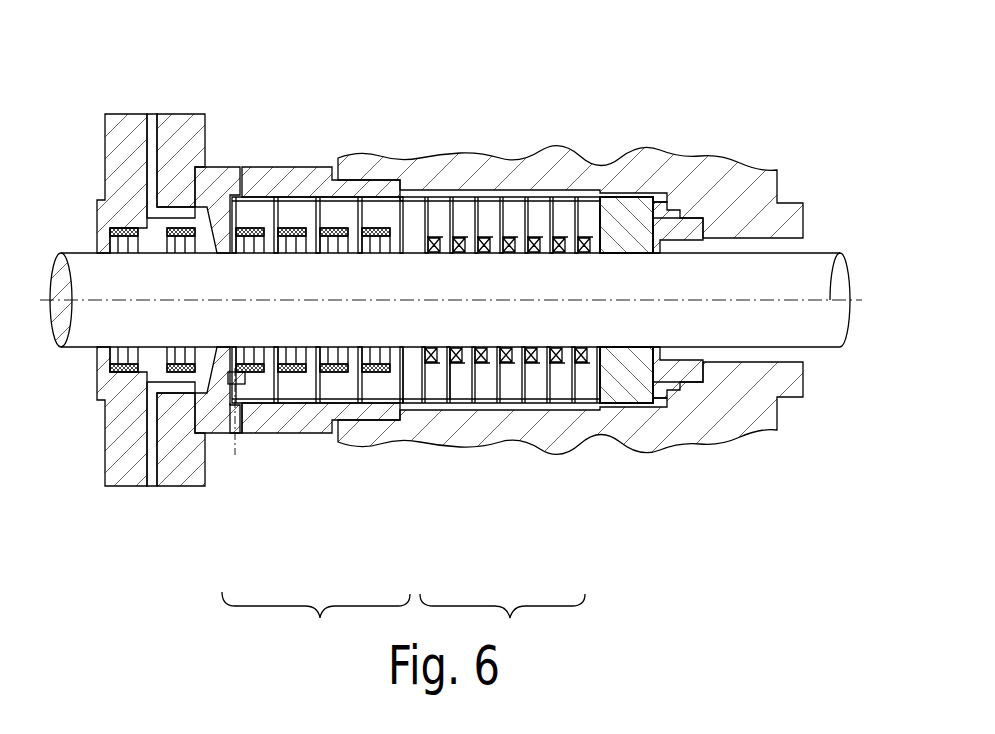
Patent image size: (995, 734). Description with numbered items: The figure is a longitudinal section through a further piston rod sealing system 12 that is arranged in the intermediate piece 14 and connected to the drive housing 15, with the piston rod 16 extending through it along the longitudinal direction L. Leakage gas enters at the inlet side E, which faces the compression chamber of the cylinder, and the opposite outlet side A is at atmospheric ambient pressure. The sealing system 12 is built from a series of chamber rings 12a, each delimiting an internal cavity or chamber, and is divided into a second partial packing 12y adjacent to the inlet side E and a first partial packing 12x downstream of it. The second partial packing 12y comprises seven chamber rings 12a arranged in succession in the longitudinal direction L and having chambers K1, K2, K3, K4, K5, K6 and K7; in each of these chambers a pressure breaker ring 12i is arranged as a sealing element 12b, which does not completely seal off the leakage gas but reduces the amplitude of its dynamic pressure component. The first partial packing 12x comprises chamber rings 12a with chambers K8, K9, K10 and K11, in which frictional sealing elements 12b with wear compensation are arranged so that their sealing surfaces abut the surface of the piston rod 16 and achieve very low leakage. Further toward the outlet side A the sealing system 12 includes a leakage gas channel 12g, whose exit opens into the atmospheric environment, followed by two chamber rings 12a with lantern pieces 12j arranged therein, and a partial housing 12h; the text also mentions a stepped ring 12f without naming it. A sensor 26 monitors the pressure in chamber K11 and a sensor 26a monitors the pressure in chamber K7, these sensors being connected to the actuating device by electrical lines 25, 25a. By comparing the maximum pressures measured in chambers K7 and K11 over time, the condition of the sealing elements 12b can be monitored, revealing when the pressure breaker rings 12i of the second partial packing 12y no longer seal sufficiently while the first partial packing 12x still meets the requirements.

The piston rod sealing system 12 is at (801, 100).
The chamber ring 12a is at (581, 363).
The sealing element 12b is at (370, 232).
The stepped insert ring 12f is at (615, 400).
The leakage gas channel 12g is at (160, 125).
The partial housing 12h is at (790, 400).
The pressure breaker ring 12i is at (582, 237).
The lantern piece 12j is at (186, 373).
The first partial packing 12x is at (316, 615).
The second partial packing 12y is at (502, 616).
The intermediate piece 14 is at (722, 425).
The drive housing 15 is at (128, 130).
The piston rod 16 is at (82, 324).
The electrical line 25 is at (245, 404).
The electrical line 25a is at (452, 404).
The sensor 26 is at (222, 404).
The sensor 26a is at (424, 406).
The first chamber K1 is at (565, 414).
The second chamber K2 is at (538, 414).
The third chamber K3 is at (512, 414).
The fourth chamber K4 is at (487, 414).
The fifth chamber K5 is at (462, 414).
The sixth chamber K6 is at (437, 414).
The seventh chamber K7 is at (422, 412).
The chamber K8 is at (372, 374).
The chamber K9 is at (330, 374).
The chamber K10 is at (290, 374).
The chamber K11 is at (245, 380).
The outlet side A is at (53, 228).
The inlet side E is at (846, 241).
The longitudinal direction L is at (850, 315).